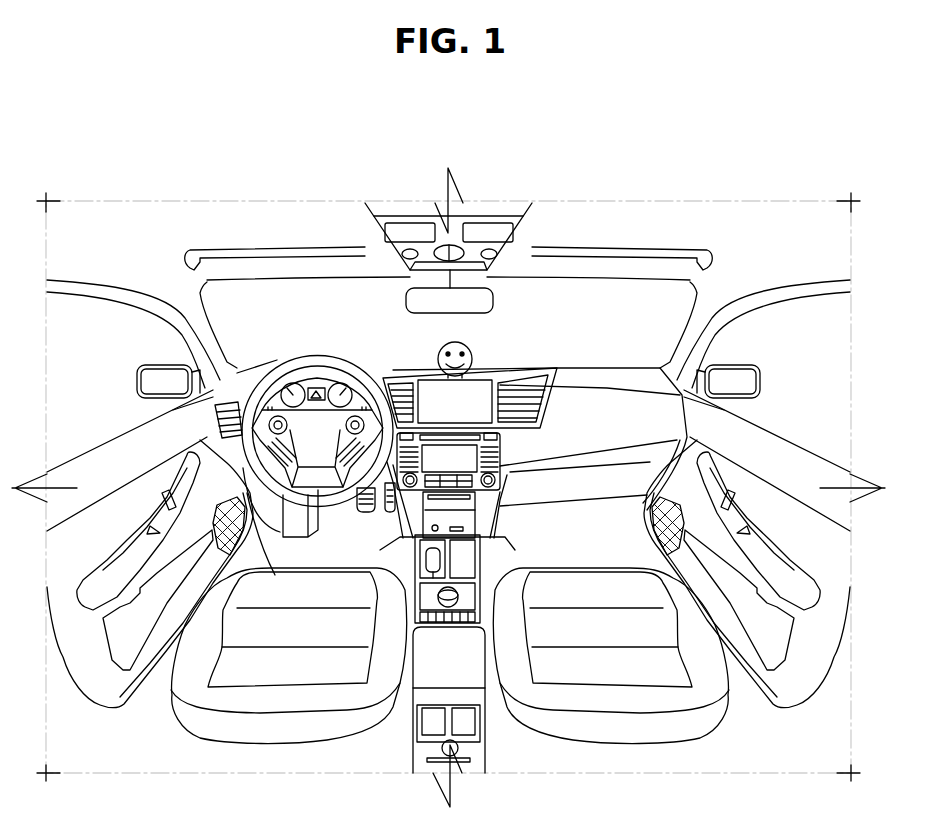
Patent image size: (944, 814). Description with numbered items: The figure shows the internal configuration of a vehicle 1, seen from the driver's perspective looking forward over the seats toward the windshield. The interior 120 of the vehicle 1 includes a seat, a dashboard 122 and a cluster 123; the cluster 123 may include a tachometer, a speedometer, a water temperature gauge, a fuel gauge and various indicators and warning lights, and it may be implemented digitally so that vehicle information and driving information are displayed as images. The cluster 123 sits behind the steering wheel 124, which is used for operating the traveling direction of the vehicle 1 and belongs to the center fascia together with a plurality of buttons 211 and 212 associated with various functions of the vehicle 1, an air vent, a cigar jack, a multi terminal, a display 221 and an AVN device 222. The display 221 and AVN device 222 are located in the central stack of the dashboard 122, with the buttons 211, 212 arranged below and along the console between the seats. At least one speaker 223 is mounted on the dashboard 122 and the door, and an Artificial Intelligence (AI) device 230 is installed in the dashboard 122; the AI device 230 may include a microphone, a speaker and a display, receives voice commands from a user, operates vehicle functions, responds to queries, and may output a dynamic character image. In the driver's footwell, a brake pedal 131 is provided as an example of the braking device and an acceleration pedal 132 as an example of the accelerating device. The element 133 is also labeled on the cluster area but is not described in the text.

The vehicle 1 is at (239, 151).
The interior 120 is at (620, 232).
The dashboard 122 is at (617, 400).
The cluster 123 is at (305, 378).
The steering wheel 124 is at (326, 357).
The brake pedal 131 is at (360, 515).
The acceleration pedal 132 is at (390, 515).
The cluster display 133 is at (358, 400).
The button 211 is at (497, 465).
The button 212 is at (483, 578).
The display 221 is at (498, 444).
The AVN device 222 is at (488, 384).
The speaker 223 is at (654, 514).
The Artificial Intelligence (AI) device 230 is at (441, 353).